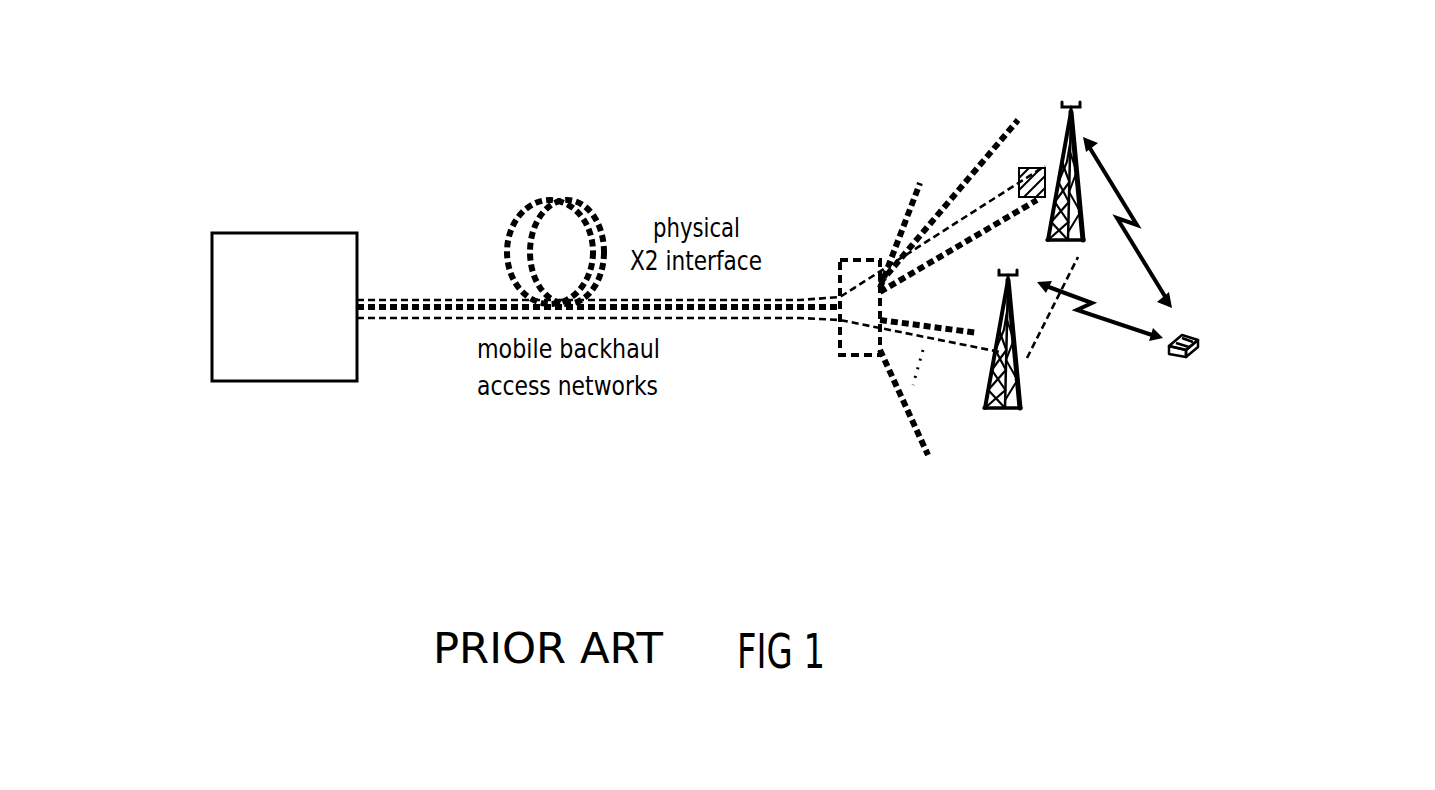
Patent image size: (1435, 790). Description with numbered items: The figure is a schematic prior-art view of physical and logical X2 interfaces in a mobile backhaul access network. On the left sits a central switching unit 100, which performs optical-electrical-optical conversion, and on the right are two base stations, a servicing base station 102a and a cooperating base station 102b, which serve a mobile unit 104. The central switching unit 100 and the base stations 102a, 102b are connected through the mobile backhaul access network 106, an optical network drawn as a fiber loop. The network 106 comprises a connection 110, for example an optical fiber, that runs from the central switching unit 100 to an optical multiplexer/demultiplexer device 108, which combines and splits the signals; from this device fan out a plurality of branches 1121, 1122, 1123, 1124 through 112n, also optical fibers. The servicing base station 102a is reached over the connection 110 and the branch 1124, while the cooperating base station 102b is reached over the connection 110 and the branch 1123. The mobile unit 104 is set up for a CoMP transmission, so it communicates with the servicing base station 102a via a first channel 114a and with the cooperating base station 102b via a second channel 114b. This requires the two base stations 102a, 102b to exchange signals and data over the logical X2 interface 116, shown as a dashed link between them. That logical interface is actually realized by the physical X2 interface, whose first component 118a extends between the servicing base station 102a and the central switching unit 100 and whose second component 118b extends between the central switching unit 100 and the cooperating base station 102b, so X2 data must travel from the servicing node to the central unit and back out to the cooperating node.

The central switching unit 100 is at (283, 233).
The mobile backhaul access network 106 is at (559, 190).
The optical multiplexer/demultiplexer device 108 is at (857, 258).
The connection 110 is at (730, 314).
The first component of the physical X2 interface 118a is at (812, 322).
The second component of the physical X2 interface 118b is at (808, 296).
The branch 1121 is at (912, 185).
The branch 1122 is at (997, 140).
The branch 1123 is at (973, 247).
The branch 1124 is at (953, 332).
The branch 112n is at (902, 404).
The servicing base station 102a is at (1020, 404).
The cooperating base station 102b is at (1078, 118).
The mobile unit 104 is at (1196, 340).
The first channel 114a is at (1147, 335).
The second channel 114b is at (1143, 245).
The logical X2 interface 116 is at (1077, 260).